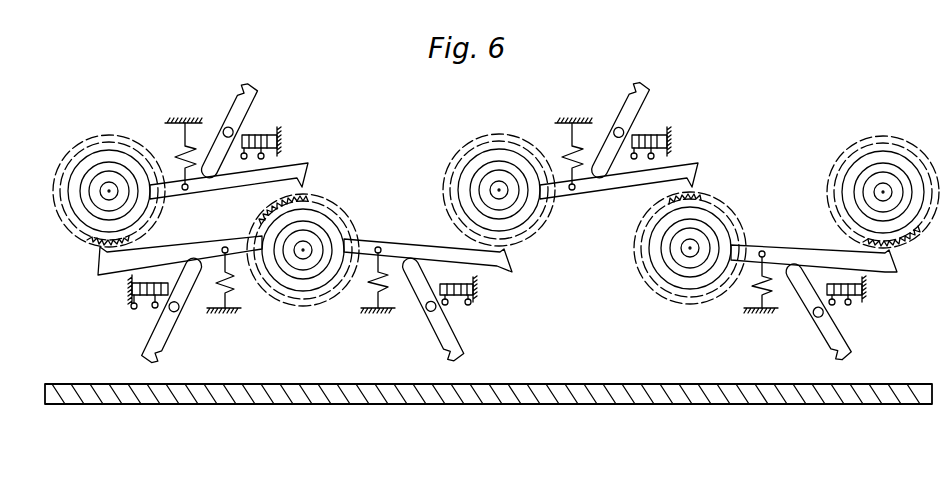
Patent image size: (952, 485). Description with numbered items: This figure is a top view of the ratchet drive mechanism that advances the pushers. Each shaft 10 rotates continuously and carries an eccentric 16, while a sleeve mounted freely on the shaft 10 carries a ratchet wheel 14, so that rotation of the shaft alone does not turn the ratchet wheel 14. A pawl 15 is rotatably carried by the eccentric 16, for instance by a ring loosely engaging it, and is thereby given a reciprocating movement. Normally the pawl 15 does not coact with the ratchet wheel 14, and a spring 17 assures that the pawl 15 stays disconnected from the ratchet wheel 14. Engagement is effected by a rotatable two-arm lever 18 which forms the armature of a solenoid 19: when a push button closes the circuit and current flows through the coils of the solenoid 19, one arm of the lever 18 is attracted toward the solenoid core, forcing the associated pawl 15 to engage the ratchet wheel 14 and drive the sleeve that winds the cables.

The shaft 10 is at (109, 187).
The ratchet wheel 14 is at (98, 245).
The pawl 15 is at (248, 180).
The eccentric 16 is at (133, 207).
The spring 17 is at (232, 292).
The two-arm lever 18 is at (189, 298).
The solenoid 19 is at (145, 297).